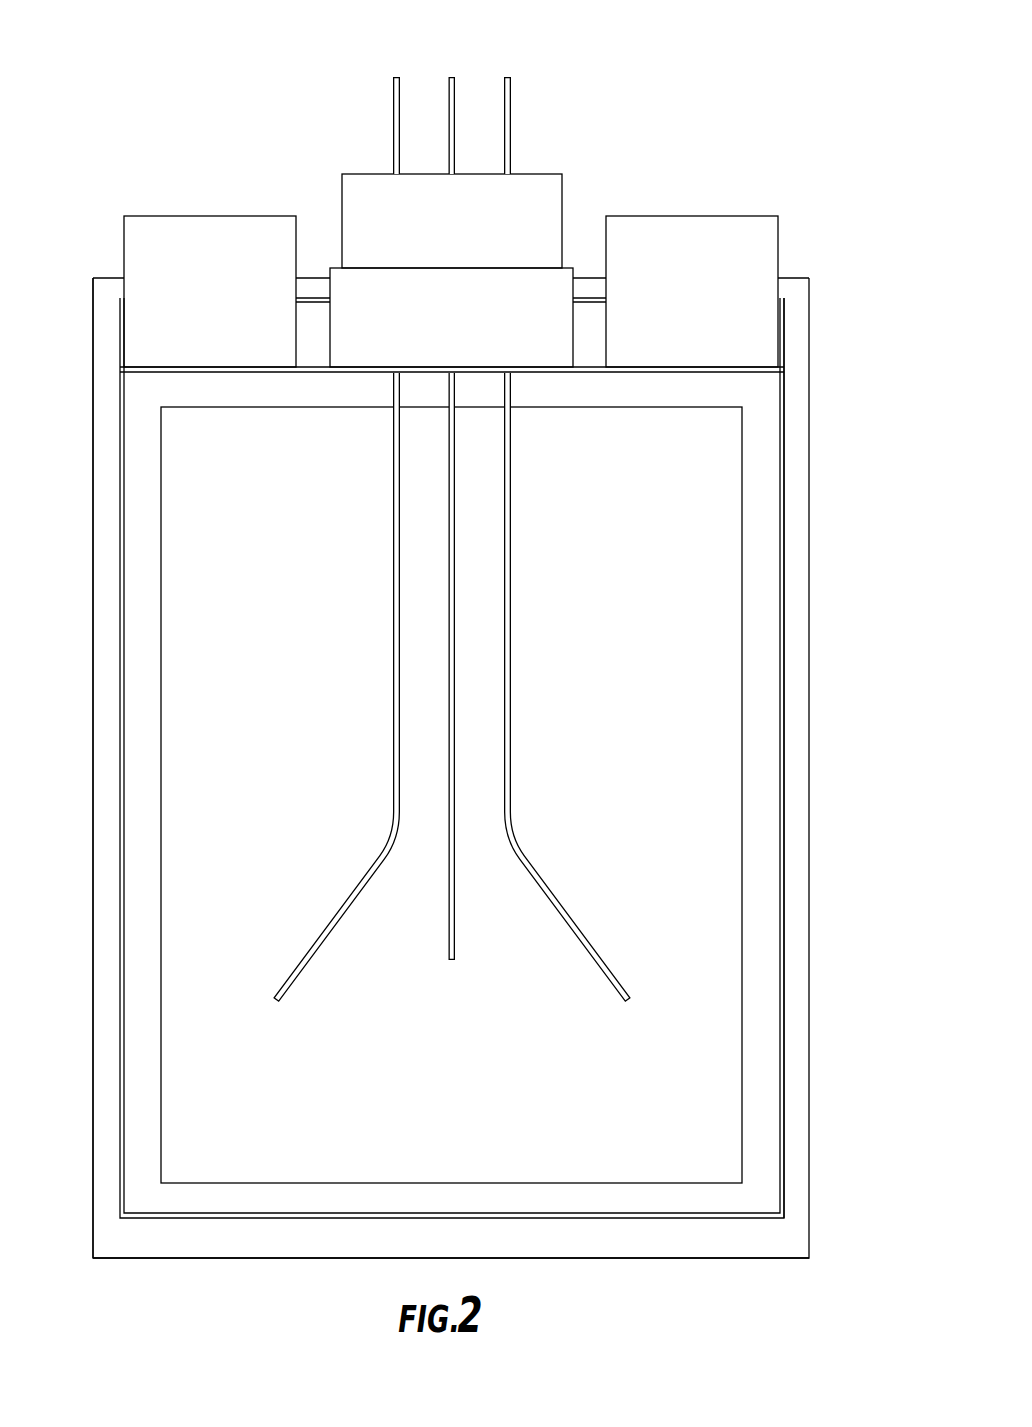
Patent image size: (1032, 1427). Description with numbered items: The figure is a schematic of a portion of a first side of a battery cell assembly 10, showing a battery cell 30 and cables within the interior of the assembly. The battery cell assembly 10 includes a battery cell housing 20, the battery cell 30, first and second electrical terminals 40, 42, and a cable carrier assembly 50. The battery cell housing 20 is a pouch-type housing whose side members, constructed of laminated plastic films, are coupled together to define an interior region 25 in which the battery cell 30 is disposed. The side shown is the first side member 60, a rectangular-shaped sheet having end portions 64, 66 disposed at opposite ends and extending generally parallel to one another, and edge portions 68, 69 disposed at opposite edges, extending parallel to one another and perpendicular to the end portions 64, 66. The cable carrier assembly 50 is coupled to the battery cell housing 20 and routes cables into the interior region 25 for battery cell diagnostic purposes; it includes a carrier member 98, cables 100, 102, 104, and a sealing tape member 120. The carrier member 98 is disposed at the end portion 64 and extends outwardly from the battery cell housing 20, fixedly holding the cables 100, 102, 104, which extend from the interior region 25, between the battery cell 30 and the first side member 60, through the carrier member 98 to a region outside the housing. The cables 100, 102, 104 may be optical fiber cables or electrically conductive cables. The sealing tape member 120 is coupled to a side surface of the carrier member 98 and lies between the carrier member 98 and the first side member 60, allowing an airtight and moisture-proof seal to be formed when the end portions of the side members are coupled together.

The battery cell assembly 10 is at (789, 122).
The battery cell housing 20 is at (815, 510).
The interior region 25 is at (758, 447).
The battery cell 30 is at (662, 406).
The first electrical terminal 40 is at (212, 218).
The second electrical terminal 42 is at (678, 218).
The cable carrier assembly 50 is at (453, 279).
The first side member 60 is at (797, 327).
The end portion 64 is at (165, 326).
The end portion 66 is at (212, 1245).
The edge portion 68 is at (110, 735).
The edge portion 69 is at (795, 621).
The carrier member 98 is at (363, 185).
The cable 100 is at (396, 75).
The cable 102 is at (452, 75).
The cable 104 is at (507, 75).
The sealing tape member 120 is at (372, 346).